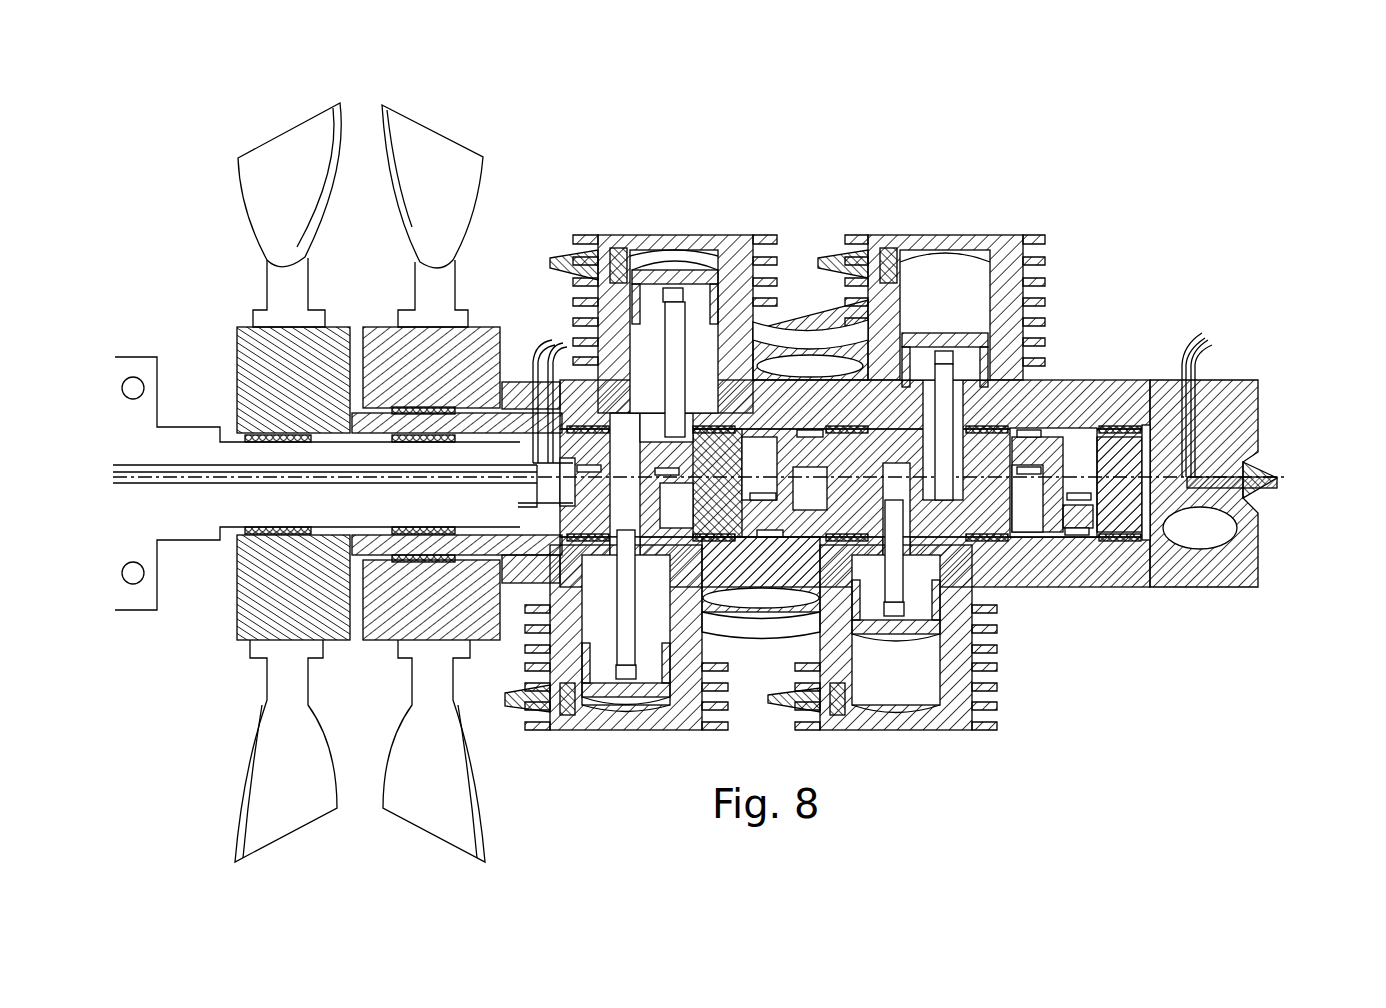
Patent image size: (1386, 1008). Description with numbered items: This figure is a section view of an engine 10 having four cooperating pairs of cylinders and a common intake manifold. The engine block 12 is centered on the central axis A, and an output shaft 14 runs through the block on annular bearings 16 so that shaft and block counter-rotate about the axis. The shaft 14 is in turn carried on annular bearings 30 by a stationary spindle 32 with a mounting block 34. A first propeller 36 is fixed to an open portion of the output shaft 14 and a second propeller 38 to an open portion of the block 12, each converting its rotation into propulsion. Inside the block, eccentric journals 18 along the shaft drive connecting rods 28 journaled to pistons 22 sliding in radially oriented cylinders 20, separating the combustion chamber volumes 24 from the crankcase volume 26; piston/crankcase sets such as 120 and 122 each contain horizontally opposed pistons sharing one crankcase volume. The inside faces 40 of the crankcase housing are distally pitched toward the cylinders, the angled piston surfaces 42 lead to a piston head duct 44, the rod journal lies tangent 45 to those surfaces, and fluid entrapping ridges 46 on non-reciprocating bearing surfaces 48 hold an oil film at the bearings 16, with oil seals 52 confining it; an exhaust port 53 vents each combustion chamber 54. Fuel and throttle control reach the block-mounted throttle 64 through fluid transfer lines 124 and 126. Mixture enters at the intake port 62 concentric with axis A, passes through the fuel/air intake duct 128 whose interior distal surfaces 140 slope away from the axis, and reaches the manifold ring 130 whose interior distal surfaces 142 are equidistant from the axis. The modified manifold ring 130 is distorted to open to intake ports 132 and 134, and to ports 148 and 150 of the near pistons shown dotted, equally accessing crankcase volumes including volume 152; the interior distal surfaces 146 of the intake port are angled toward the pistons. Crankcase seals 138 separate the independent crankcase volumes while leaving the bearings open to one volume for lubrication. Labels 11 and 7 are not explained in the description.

The engine 10 is at (725, 95).
The cylinder head 11 is at (1030, 262).
The engine block 12 is at (1200, 578).
The output shaft 14 is at (1200, 450).
The annular bearings 16 is at (1125, 452).
The eccentric journals 18 is at (972, 533).
The cylinders 20 is at (1000, 290).
The pistons 22 is at (1002, 320).
The combustion chamber volumes 24 is at (972, 282).
The crankcase volume 26 is at (937, 417).
The connecting rod 28 is at (970, 397).
The annular bearings 30 is at (407, 527).
The stationary spindle 32 is at (237, 500).
The mounting block 34 is at (132, 420).
The first propeller 36 is at (310, 140).
The second propeller 38 is at (448, 168).
The inside faces of crankcase housing 40 is at (928, 410).
The angled piston surfaces 42 is at (917, 377).
The piston head duct 44 is at (1017, 360).
The tangent 45 is at (920, 372).
The fluid entrapping ridges 46 is at (920, 430).
The non-reciprocating bearing surfaces 48 is at (835, 400).
The oil seals 52 is at (1020, 338).
The exhaust port 53 is at (880, 318).
The combustion chamber 54 is at (926, 256).
The intake port 62 is at (1235, 510).
The throttle 64 is at (1260, 463).
The section line 7 is at (770, 492).
The first cylinder assembly 120 is at (668, 211).
The piston/crankcase set 122 is at (937, 208).
The fluid transfer line 124 is at (550, 357).
The second tube 126 is at (542, 357).
The fuel/air intake duct 128 is at (1220, 520).
The intake manifold 130 is at (758, 370).
The intake port 132 is at (865, 345).
The intake port 134 is at (770, 352).
The crankcase seals 138 is at (820, 396).
The interior distal surfaces of intake duct 140 is at (1188, 522).
The interior distal surfaces of manifold ring 142 is at (800, 350).
The interior distal surfaces of intake port 146 is at (865, 360).
The intake port 148 is at (822, 503).
The intake port 150 is at (993, 473).
The combustion chamber 152 is at (752, 462).
The central axis A is at (1290, 477).